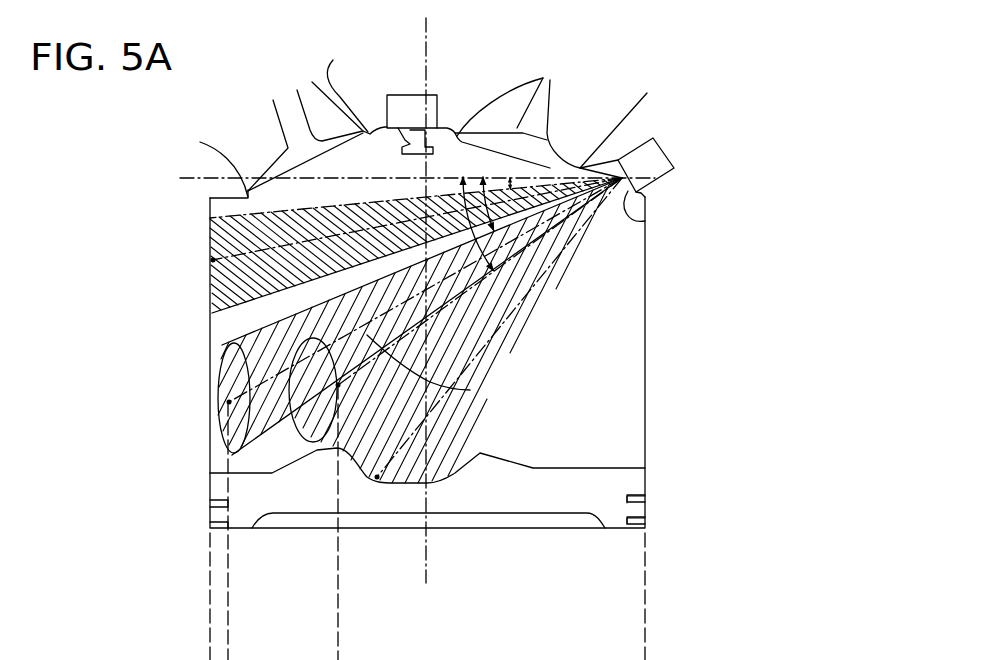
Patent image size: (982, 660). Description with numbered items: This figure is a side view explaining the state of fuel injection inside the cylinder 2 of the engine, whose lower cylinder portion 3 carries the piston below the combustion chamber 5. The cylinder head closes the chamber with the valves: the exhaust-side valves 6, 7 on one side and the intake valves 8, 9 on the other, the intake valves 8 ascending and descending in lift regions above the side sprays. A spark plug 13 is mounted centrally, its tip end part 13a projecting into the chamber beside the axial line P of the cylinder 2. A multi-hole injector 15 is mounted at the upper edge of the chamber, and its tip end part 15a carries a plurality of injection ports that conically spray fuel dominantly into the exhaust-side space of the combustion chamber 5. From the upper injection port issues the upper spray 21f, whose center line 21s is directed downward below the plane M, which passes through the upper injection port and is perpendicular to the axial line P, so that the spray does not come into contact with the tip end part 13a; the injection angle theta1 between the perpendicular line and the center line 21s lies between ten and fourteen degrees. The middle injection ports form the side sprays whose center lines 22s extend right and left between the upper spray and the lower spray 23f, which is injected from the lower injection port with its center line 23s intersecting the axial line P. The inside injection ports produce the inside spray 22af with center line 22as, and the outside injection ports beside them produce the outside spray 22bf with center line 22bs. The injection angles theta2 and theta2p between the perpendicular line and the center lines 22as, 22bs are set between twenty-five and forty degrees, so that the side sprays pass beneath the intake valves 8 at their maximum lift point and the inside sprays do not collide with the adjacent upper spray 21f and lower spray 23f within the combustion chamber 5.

The cylinder 2 is at (672, 312).
The cylinder 3 is at (636, 483).
The combustion chamber 5 is at (630, 358).
The exhaust valve 6 is at (527, 72).
The intake valve 7 is at (333, 60).
The intake valve 8 is at (553, 87).
The intake valve 9 is at (288, 123).
The spark plug 13 is at (400, 107).
The tip end part of the spark plug 13a is at (410, 141).
The multi-hole injector 15 is at (663, 150).
The tip end part of the multi-hole injector 15a is at (643, 218).
The center line of the upper spray 21s is at (212, 260).
The upper spray 21f is at (212, 282).
The center line of the side spray 22s is at (324, 419).
The center line of the inside spray 22as is at (229, 402).
The inside spray 22af is at (225, 418).
The center line of the outside spray 22bs is at (418, 345).
The outside spray 22bf is at (303, 442).
The center line of the lower spray 23s is at (482, 357).
The lower spray 23f is at (445, 430).
The axial line of the cylinder P is at (430, 37).
The plane M is at (180, 178).
The injection angle Θ1 theta1 is at (549, 137).
The injection angle Θ2 theta2 is at (507, 227).
The injection angle Θ2' theta2p is at (518, 265).